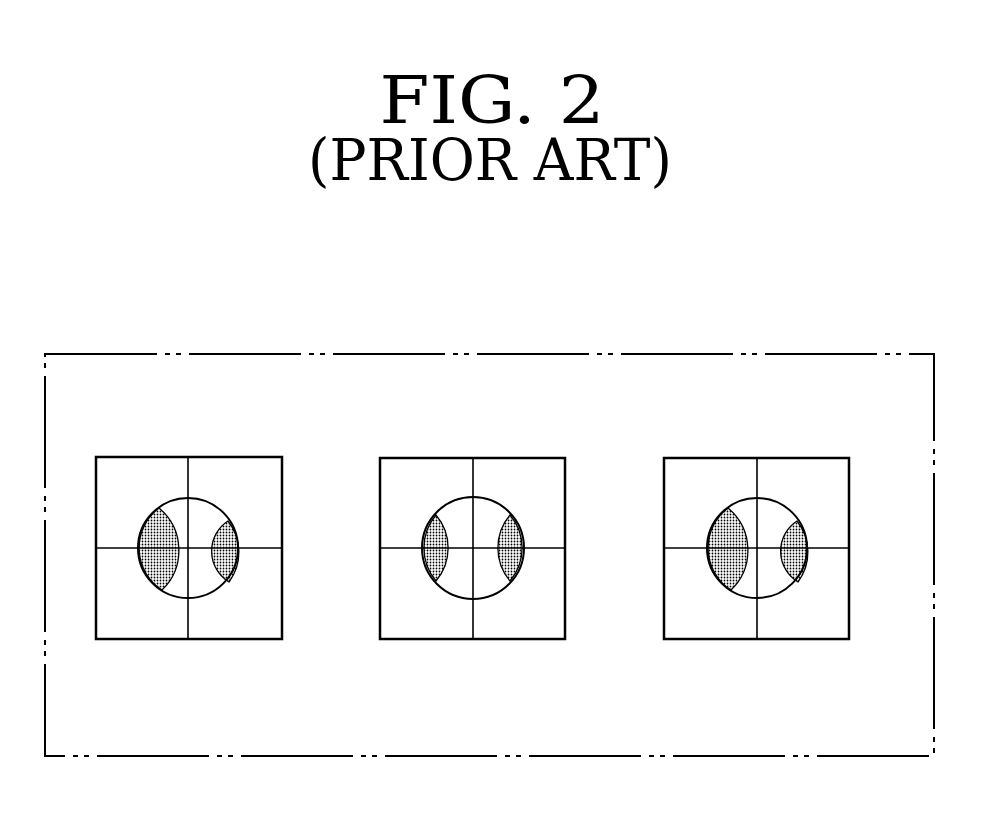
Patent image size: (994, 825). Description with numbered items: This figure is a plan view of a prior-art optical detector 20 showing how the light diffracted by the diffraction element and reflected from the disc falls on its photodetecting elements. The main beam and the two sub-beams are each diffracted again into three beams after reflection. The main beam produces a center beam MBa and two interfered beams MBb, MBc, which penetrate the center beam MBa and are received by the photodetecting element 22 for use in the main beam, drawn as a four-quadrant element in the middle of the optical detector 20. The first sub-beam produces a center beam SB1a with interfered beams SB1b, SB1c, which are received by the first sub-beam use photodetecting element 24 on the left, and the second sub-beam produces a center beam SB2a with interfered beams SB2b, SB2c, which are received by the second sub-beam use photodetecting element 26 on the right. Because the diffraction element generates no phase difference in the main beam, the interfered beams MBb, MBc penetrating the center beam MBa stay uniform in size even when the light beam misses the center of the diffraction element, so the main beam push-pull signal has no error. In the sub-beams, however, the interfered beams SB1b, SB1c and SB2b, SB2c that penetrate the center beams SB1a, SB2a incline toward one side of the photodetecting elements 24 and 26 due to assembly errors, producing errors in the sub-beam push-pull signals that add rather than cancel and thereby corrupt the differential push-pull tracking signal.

The optical detector 20 is at (452, 312).
The photodetecting element for use in the main beam 22 is at (442, 639).
The first sub-beam use photodetecting element 24 is at (158, 639).
The second sub-beam use photodetecting element 26 is at (727, 639).
The center beam of the main beam MBa is at (478, 503).
The interfered beam of the main beam MBb is at (438, 518).
The interfered beam of the main beam MBc is at (524, 532).
The center beam of the first sub-beam SB1a is at (195, 504).
The interfered beam of the first sub-beam SB1b is at (160, 509).
The interfered beam of the first sub-beam SB1c is at (239, 533).
The center beam of the second sub-beam SB2a is at (765, 503).
The interfered beam of the second sub-beam SB2b is at (729, 509).
The interfered beam of the second sub-beam SB2c is at (805, 533).